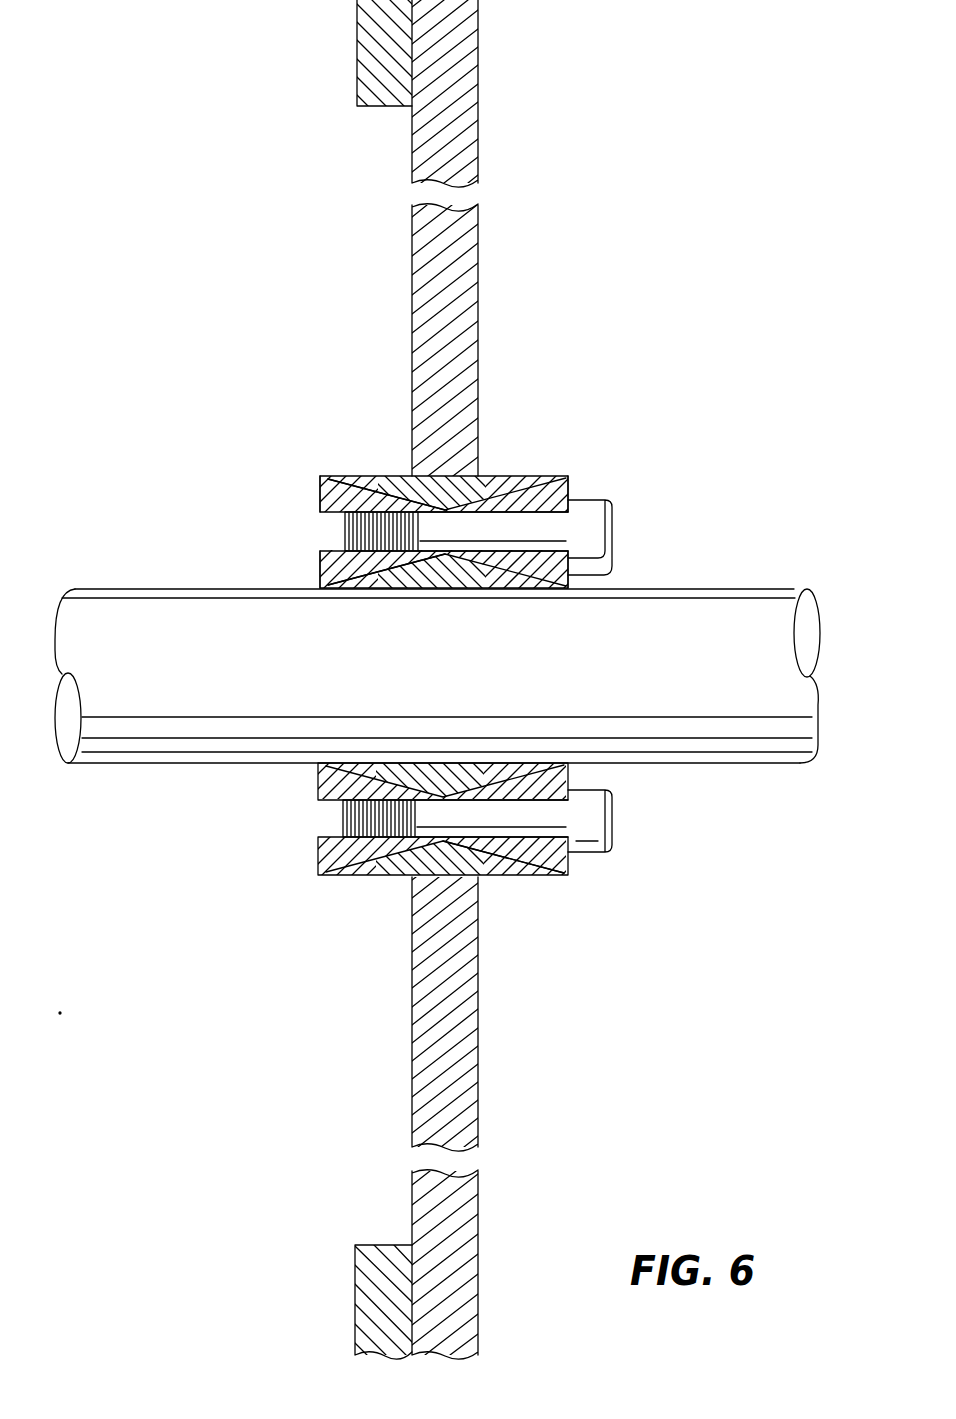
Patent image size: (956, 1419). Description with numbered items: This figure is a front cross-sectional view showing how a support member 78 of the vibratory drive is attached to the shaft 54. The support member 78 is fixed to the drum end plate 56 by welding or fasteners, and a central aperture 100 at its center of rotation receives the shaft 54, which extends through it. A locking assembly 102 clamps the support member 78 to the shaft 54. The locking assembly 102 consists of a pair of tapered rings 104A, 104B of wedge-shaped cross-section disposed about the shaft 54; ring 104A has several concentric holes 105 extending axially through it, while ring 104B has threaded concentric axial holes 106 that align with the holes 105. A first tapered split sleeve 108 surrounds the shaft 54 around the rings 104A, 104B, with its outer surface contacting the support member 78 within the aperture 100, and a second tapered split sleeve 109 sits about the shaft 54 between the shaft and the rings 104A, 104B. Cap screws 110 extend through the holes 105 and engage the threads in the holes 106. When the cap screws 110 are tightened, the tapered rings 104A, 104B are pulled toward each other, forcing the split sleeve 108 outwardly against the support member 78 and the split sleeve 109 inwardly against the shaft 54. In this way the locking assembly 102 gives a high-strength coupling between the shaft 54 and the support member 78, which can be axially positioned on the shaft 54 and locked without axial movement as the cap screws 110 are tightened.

The shaft 54 is at (748, 603).
The drum end plate 56 is at (357, 58).
The support member 78 is at (478, 283).
The central aperture 100 is at (478, 476).
The locking assembly 102 is at (621, 483).
The tapered ring 104A is at (568, 586).
The tapered ring 104B is at (318, 568).
The holes 105 is at (553, 857).
The threaded holes 106 is at (318, 802).
The first tapered split sleeve 108 is at (372, 476).
The second tapered split sleeve 109 is at (352, 590).
The cap screws 110 is at (597, 823).